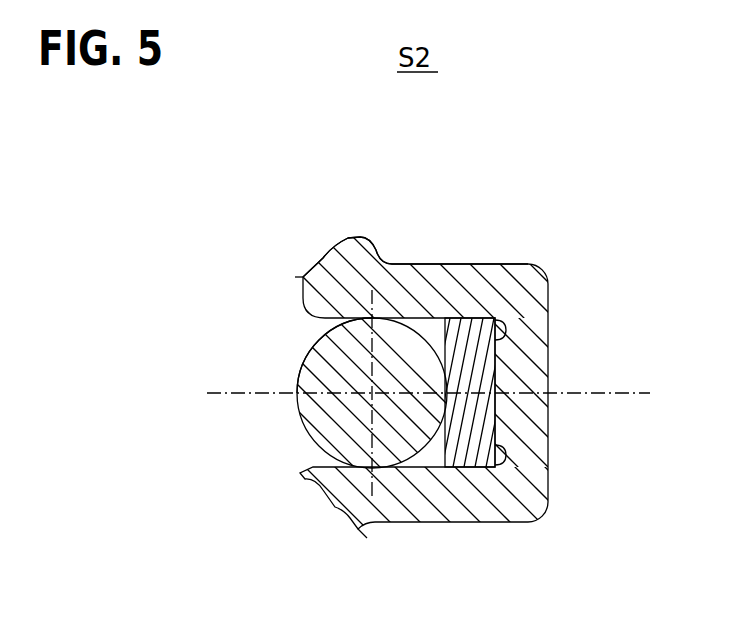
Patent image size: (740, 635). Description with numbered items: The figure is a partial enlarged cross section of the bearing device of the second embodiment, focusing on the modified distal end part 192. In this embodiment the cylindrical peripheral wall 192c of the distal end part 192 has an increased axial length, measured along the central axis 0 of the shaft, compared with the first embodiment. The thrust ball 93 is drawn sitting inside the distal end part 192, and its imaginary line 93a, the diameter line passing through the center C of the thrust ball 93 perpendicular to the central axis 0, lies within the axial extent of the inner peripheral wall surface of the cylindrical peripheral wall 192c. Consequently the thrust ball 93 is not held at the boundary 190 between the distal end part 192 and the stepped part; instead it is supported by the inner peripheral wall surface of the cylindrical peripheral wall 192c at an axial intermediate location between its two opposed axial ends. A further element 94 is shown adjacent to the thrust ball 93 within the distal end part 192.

The distal end part 192 is at (507, 264).
The cylindrical peripheral wall 192c is at (427, 283).
The boundary 190 is at (305, 305).
The retainer 94 is at (473, 372).
The thrust ball 93 is at (400, 430).
The imaginary line 93a is at (363, 363).
The center C is at (372, 395).
The central axis 0 is at (630, 393).